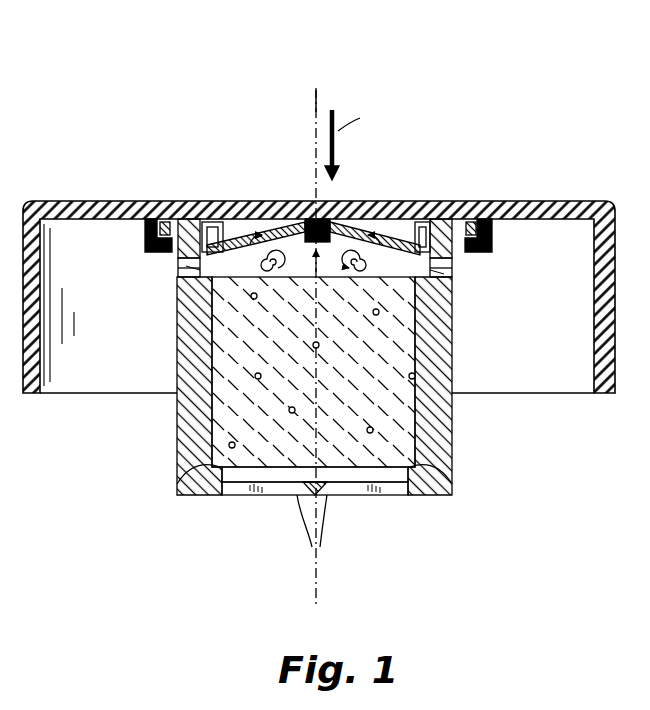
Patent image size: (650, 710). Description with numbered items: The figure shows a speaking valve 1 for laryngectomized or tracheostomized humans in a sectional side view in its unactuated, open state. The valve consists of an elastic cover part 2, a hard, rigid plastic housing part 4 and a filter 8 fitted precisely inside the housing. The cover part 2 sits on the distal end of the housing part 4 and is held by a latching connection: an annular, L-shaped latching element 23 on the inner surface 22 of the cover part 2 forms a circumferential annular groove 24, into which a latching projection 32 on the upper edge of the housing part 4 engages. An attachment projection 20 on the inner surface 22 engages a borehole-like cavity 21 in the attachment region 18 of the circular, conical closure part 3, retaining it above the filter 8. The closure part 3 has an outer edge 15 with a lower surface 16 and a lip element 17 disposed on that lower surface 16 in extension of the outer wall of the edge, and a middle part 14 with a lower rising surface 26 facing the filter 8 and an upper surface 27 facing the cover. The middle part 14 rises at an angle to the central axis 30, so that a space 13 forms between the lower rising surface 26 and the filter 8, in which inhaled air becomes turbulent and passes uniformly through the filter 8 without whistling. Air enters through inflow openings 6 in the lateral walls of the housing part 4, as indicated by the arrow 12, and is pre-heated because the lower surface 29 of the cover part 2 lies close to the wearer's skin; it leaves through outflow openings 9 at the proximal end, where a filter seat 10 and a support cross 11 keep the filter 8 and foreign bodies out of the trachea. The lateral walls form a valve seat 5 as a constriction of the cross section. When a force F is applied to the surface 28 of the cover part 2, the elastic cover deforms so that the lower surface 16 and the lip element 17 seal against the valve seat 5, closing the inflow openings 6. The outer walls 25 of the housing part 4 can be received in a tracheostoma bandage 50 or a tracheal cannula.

The speaking valve 1 is at (319, 317).
The cover part 2 is at (319, 288).
The closure part 3 is at (237, 181).
The housing part 4 is at (325, 360).
The valve seat 5 is at (186, 268).
The inflow openings 6 is at (192, 270).
The filter 8 is at (405, 435).
The outflow openings 9 is at (258, 501).
The filter seat 10 is at (178, 482).
The support cross 11 is at (312, 528).
The arrow 12 is at (466, 386).
The space 13 is at (380, 202).
The middle part 14 is at (280, 202).
The outer edge 15 is at (455, 202).
The lower surface 16 is at (453, 267).
The lip element 17 is at (197, 202).
The attachment region 18 is at (382, 200).
The attachment projection 20 is at (318, 202).
The cavity 21 is at (315, 255).
The inner surface 22 is at (242, 202).
The latching element 23 is at (520, 219).
The annular groove 24 is at (120, 196).
The outer walls 25 is at (457, 476).
The lower rising surface 26 is at (443, 313).
The upper surface 27 is at (412, 202).
The surface 28 is at (319, 289).
The lower surface 29 is at (28, 398).
The central axis 30 is at (318, 100).
The latching projection 32 is at (163, 200).
The tracheostoma bandage 50 is at (218, 202).